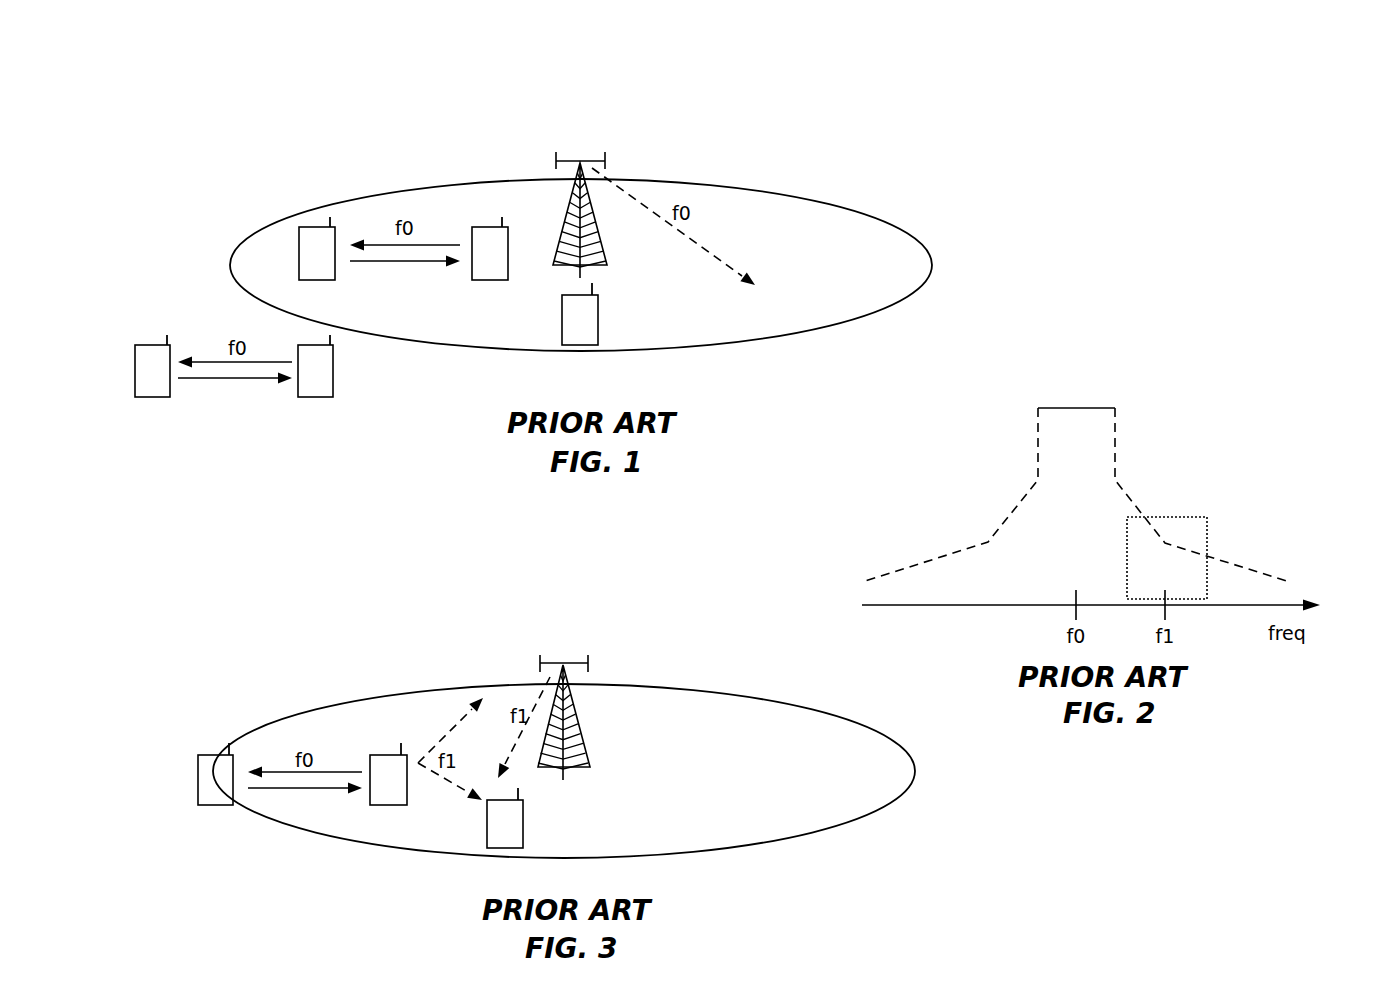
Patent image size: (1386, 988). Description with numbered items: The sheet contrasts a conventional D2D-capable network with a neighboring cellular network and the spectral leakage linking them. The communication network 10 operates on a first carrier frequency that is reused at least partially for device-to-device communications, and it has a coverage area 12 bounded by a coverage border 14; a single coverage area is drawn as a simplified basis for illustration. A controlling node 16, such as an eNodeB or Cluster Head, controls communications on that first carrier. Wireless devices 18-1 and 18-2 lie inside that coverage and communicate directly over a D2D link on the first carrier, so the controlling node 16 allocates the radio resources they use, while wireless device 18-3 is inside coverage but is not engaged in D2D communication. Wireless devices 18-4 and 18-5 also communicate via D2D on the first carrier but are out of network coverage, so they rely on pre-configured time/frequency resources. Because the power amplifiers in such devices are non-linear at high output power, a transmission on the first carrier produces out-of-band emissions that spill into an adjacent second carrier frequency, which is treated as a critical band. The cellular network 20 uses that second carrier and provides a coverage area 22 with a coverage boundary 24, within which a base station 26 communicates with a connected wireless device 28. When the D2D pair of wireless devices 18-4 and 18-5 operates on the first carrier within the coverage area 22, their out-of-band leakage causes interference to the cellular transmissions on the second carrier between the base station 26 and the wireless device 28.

In FIG. 1, the communication network 10 is at (337, 158).
In FIG. 1, the coverage area 12 is at (843, 268).
In FIG. 1, the coverage border 14 is at (933, 267).
In FIG. 1, the controlling node 16 is at (600, 237).
In FIG. 1, the wireless device 18-1 is at (490, 280).
In FIG. 1, the wireless device 18-2 is at (317, 280).
In FIG. 1, the wireless device 18-3 is at (580, 345).
In FIG. 1, the wireless device 18-4 is at (317, 397).
In FIG. 3, the wireless device 18-4 is at (388, 805).
In FIG. 1, the wireless device 18-5 is at (152, 397).
In FIG. 3, the wireless device 18-5 is at (215, 805).
In FIG. 3, the cellular network 20 is at (367, 634).
In FIG. 3, the coverage area 22 is at (827, 773).
In FIG. 3, the coverage boundary 24 is at (917, 772).
In FIG. 3, the base station 26 is at (580, 738).
In FIG. 3, the wireless device 28 is at (505, 848).